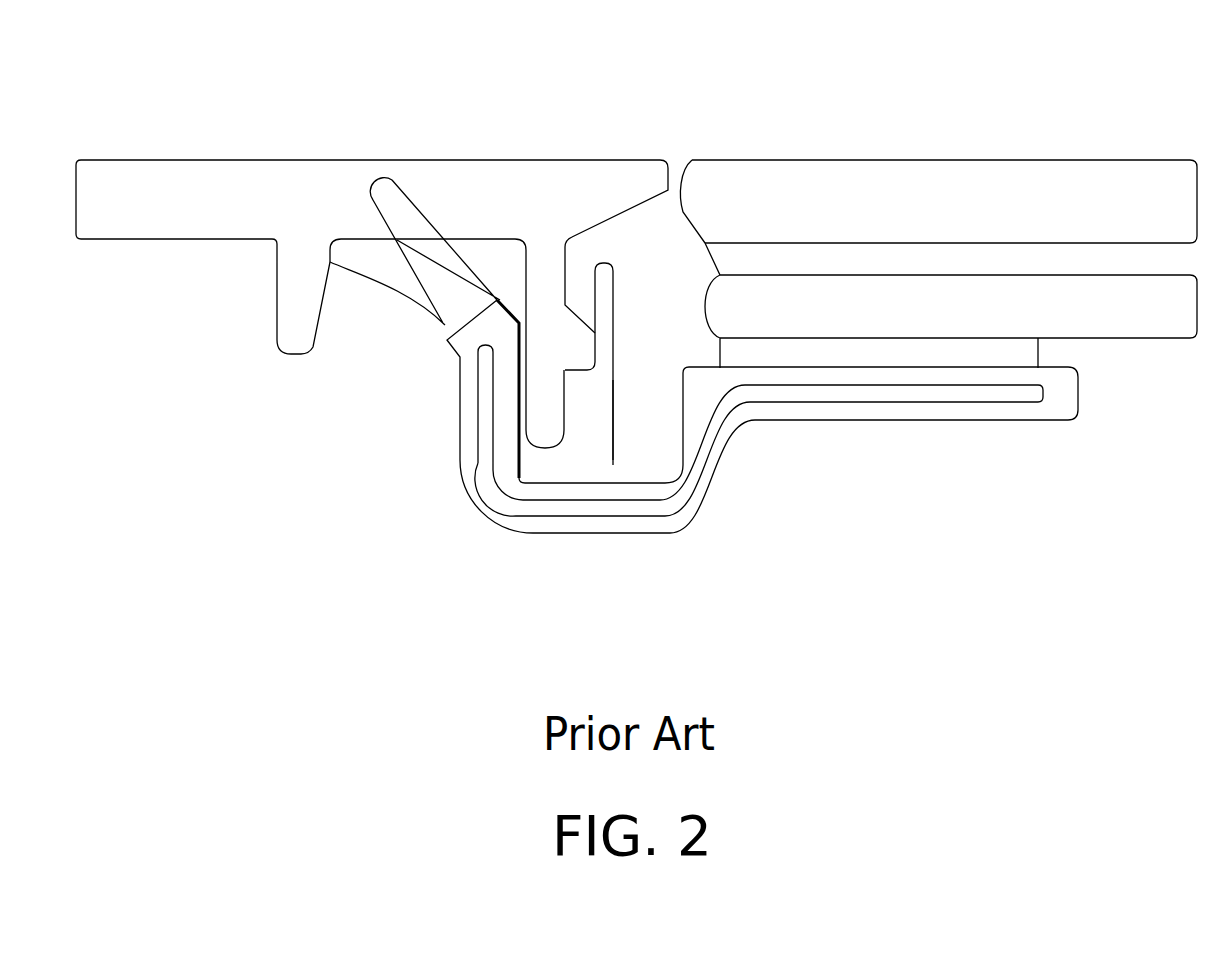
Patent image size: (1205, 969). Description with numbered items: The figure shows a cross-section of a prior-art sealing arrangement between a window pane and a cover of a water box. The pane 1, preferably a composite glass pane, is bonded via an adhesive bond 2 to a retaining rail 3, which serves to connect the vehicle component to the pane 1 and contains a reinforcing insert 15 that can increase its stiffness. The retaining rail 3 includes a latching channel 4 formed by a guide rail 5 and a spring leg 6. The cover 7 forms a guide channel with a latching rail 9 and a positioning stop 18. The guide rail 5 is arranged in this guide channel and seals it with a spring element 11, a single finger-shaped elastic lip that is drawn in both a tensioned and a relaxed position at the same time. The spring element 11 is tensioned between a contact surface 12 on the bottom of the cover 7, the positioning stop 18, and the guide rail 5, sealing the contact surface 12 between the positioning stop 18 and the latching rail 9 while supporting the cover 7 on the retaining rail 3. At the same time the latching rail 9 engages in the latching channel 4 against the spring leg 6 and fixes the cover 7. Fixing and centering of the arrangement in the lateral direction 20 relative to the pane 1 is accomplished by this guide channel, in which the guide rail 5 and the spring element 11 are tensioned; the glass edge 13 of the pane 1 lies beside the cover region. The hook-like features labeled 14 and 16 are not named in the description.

The pane 1 is at (1132, 314).
The adhesive bond 2 is at (982, 359).
The retaining rail 3 is at (930, 430).
The latching channel 4 is at (547, 470).
The guide rail 5 is at (456, 420).
The spring leg 6 is at (602, 378).
The cover 7 is at (292, 151).
The latching rail 9 is at (540, 283).
The spring element 11 is at (406, 331).
The contact surface 12 is at (479, 254).
The glass edge 13 is at (688, 201).
The hook 14 is at (600, 271).
The reinforcing insert 15 is at (850, 410).
The hook 16 is at (577, 362).
The positioning stop 18 is at (259, 304).
The lateral direction 20 is at (512, 200).